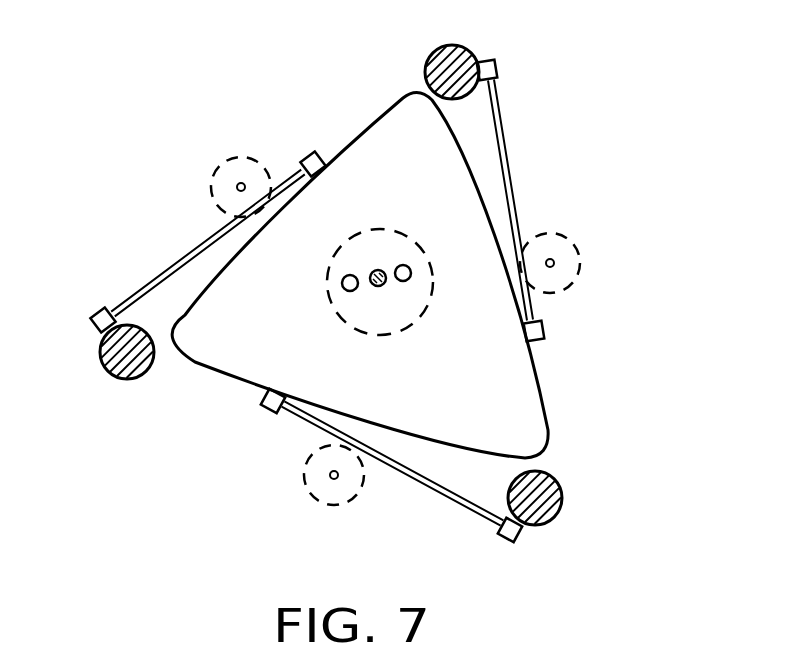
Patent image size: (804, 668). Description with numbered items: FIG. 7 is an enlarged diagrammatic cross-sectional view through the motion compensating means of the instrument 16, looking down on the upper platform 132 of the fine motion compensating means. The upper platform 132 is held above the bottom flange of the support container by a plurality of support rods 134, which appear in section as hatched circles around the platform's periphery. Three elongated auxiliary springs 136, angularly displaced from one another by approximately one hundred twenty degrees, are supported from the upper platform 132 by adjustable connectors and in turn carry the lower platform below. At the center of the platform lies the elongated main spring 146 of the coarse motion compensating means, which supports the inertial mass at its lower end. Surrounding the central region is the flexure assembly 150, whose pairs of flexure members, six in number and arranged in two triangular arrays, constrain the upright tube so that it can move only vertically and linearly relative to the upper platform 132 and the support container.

The mounting assembly 16 is at (643, 173).
The upper platform 132 is at (222, 360).
The support rods 134 is at (468, 46).
The auxiliary springs 136 is at (240, 186).
The main spring 146 is at (380, 285).
The flexure assembly 150 is at (507, 167).